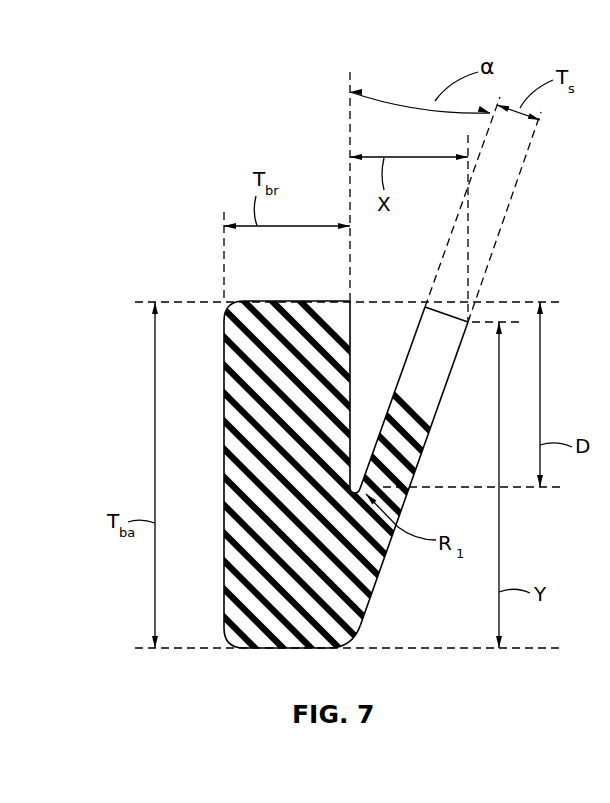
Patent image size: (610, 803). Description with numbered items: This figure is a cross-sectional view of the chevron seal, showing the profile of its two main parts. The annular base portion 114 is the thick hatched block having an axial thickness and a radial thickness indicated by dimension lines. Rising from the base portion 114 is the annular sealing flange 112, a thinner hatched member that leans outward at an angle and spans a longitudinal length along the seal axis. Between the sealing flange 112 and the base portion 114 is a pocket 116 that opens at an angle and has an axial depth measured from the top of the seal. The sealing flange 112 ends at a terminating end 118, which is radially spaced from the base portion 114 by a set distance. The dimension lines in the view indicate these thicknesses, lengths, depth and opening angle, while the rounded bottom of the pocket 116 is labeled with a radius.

The annular sealing flange 112 is at (420, 432).
The annular base portion 114 is at (232, 416).
The pocket 116 is at (383, 322).
The terminating end 118 is at (448, 312).